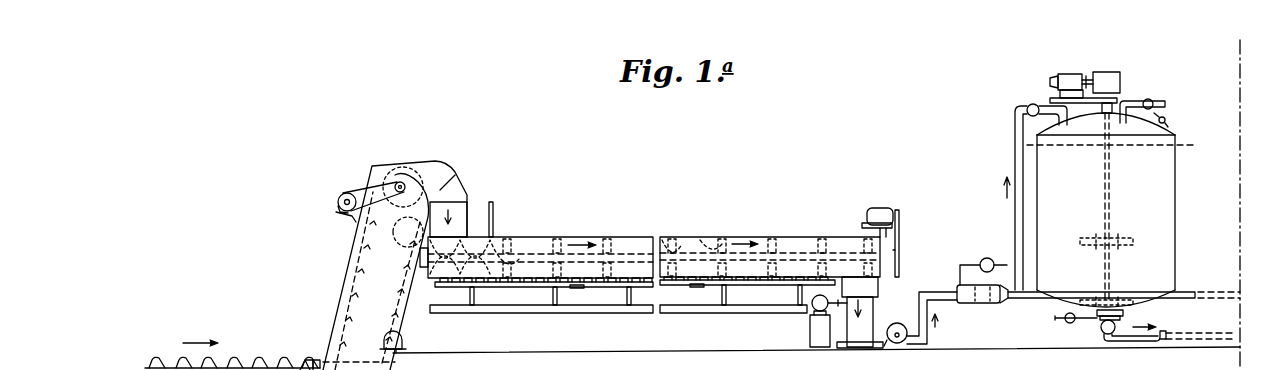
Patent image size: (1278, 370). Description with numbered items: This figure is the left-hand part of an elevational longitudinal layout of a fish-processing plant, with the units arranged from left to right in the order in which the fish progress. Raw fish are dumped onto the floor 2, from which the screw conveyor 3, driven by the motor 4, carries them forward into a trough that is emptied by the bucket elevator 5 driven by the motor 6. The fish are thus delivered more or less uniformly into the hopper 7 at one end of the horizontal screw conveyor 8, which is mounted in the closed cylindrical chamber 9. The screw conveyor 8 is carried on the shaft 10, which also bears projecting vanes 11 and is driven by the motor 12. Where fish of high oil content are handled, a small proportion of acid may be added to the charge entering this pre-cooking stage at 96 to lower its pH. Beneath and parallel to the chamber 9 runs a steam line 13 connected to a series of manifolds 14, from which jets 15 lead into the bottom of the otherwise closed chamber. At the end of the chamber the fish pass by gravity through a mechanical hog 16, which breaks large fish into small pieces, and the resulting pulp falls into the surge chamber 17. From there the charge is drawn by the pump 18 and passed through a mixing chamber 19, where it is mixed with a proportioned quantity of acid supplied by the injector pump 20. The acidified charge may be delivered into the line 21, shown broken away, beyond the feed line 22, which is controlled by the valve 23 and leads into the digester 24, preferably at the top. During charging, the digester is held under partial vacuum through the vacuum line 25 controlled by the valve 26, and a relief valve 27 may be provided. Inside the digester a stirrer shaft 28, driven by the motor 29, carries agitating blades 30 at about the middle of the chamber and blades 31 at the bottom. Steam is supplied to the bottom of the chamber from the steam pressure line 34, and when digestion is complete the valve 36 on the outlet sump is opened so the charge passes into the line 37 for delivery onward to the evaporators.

The floor 2 is at (223, 355).
The screw conveyor 3 is at (235, 360).
The motor 4 is at (403, 343).
The bucket elevator 5 is at (350, 277).
The motor 6 is at (342, 196).
The hopper 7 is at (468, 207).
The acid addition point 96 is at (494, 205).
The horizontal screw conveyor 8 is at (478, 252).
The closed cylindrical chamber 9 is at (597, 235).
The shaft 10 is at (800, 243).
The projecting vanes 11 is at (687, 237).
The motor 12 is at (877, 209).
The steam line 13 is at (531, 314).
The manifolds 14 is at (512, 292).
The jets 15 is at (600, 288).
The mechanical hog 16 is at (880, 286).
The surge chamber 17 is at (850, 346).
The pump 18 is at (897, 344).
The mixing chamber 19 is at (970, 305).
The injector pump 20 is at (987, 258).
The line 21 is at (1032, 300).
The feed line 22 is at (1014, 151).
The valve 23 is at (1031, 103).
The digester 24 is at (1182, 202).
The vacuum line 25 is at (1142, 100).
The valve 26 is at (1154, 102).
The relief valve 27 is at (1166, 119).
The stirrer shaft 28 is at (1110, 203).
The motor 29 is at (1072, 76).
The agitating blades 30 is at (1081, 237).
The blades 31 is at (1134, 305).
The steam pressure line 34 is at (1058, 321).
The valve 36 is at (1101, 332).
The line 37 is at (1161, 333).